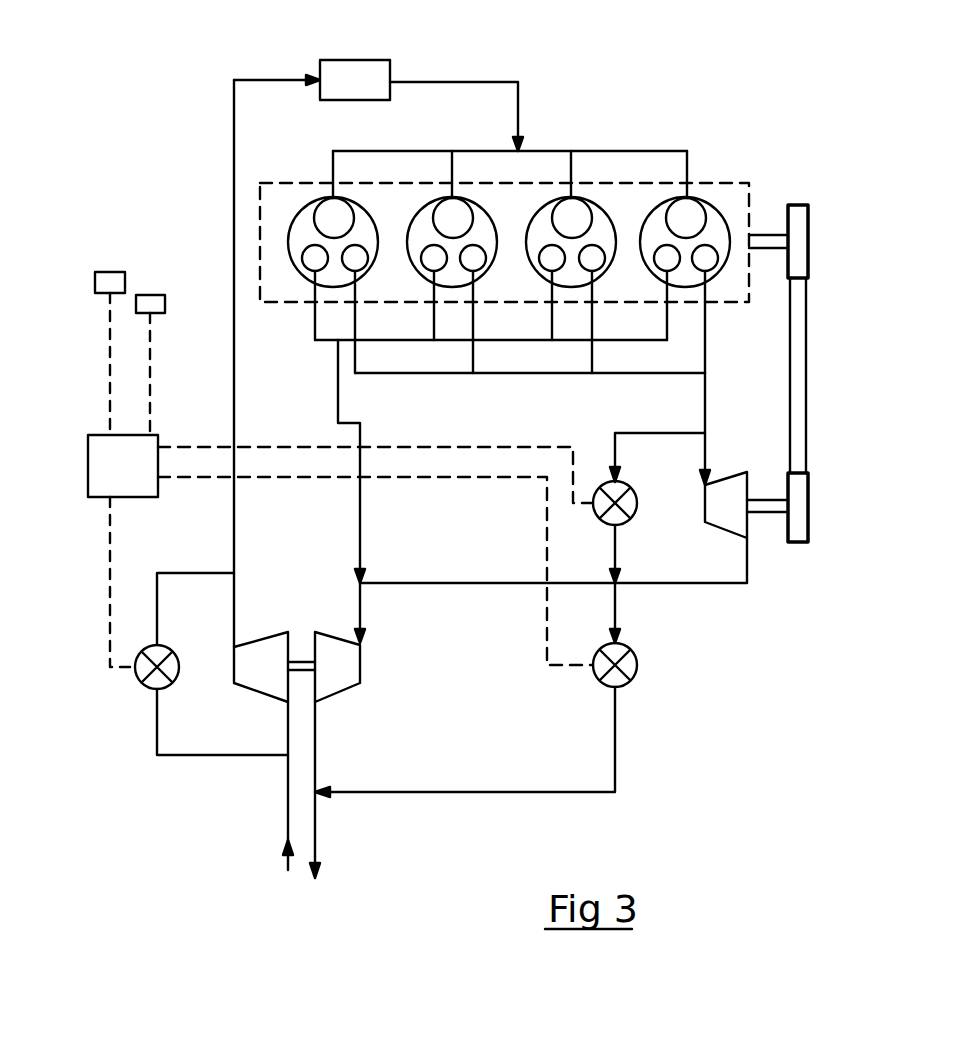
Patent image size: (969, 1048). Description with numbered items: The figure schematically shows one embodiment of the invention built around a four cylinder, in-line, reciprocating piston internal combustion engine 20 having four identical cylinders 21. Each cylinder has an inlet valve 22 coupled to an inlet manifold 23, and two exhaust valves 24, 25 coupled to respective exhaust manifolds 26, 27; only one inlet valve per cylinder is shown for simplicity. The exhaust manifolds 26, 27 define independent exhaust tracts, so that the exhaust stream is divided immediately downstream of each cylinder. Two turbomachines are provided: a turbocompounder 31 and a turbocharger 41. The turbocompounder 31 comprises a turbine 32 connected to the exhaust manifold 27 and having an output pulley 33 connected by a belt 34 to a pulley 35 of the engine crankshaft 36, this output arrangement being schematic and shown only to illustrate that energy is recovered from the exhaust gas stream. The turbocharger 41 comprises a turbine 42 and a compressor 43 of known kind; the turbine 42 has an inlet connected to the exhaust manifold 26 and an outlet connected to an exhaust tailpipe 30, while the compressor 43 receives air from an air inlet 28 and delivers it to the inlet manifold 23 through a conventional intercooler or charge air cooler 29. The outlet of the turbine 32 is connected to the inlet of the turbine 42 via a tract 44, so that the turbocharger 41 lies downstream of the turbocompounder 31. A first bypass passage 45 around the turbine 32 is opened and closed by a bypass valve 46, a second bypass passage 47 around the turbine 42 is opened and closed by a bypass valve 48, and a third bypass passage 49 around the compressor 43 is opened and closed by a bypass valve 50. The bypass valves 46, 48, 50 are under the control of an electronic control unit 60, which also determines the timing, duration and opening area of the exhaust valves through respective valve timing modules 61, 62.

The internal combustion engine 20 is at (726, 171).
The cylinder 21 is at (718, 225).
The inlet valve 22 is at (687, 215).
The inlet manifold 23 is at (583, 150).
The first exhaust valve 24 is at (312, 258).
The second exhaust valve 25 is at (351, 252).
The first exhaust manifold 26 is at (318, 343).
The second exhaust manifold 27 is at (522, 374).
The air inlet 28 is at (286, 838).
The intercooler 29 is at (400, 44).
The exhaust tailpipe 30 is at (318, 845).
The turbocompounder 31 is at (773, 553).
The turbine 32 is at (726, 526).
The output pulley 33 is at (808, 492).
The belt 34 is at (806, 373).
The pulley 35 is at (808, 236).
The engine crankshaft 36 is at (768, 235).
The turbocharger 41 is at (294, 600).
The turbine 42 is at (340, 680).
The compressor 43 is at (257, 678).
The tract 44 is at (498, 583).
The first bypass passage 45 is at (620, 412).
The bypass valve 46 is at (637, 503).
The second bypass passage 47 is at (616, 748).
The bypass valve 48 is at (637, 665).
The third bypass passage 49 is at (185, 757).
The bypass valve 50 is at (135, 668).
The electronic control unit 60 is at (146, 483).
The valve timing module 61 is at (95, 282).
The valve timing module 62 is at (166, 305).